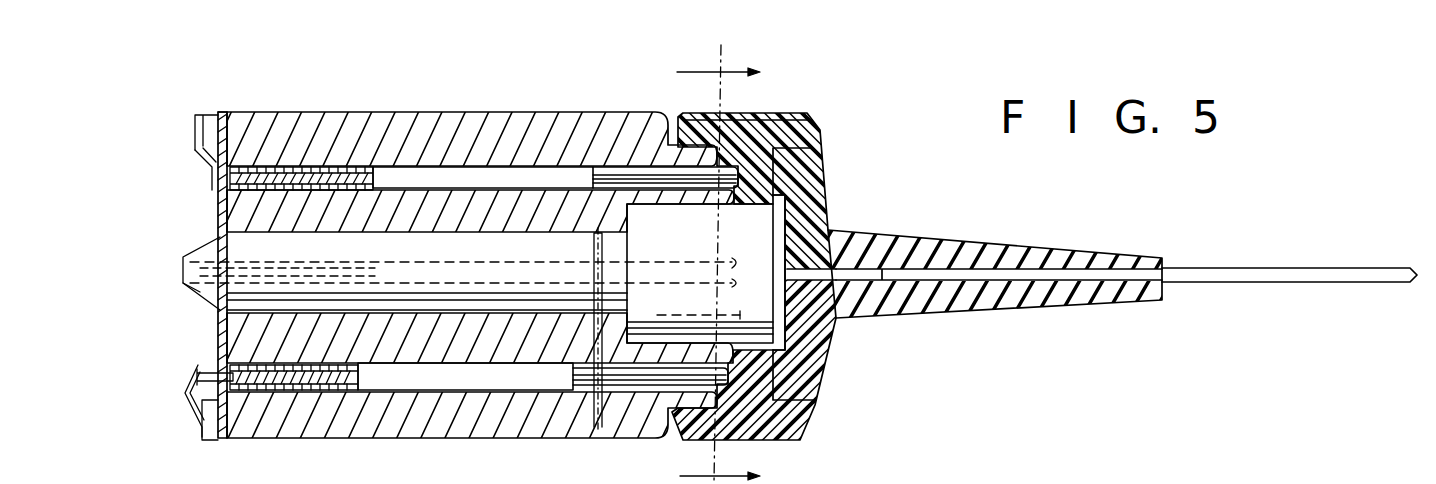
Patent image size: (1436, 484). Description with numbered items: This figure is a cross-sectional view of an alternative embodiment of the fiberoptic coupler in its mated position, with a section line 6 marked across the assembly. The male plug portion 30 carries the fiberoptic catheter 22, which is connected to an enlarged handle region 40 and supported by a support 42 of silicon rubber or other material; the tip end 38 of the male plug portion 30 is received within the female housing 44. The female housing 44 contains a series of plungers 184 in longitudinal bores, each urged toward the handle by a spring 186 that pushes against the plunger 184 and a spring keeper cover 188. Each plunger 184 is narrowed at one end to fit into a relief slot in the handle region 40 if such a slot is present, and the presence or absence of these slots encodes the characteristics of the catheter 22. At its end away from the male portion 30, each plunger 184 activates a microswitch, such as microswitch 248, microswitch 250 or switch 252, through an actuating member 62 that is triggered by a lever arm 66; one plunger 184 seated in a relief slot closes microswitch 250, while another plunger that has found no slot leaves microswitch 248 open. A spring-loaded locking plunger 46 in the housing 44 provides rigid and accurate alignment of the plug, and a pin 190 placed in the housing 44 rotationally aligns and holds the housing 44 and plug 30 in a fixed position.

The fiberoptic catheter 22 is at (1283, 270).
The male plug portion 30 is at (842, 384).
The tip end 38 is at (202, 246).
The enlarged handle region 40 is at (805, 112).
The support 42 is at (1058, 249).
The female housing 44 is at (557, 111).
The locking plunger 46 is at (593, 440).
The actuating member 62 is at (190, 413).
The lever arm 66 is at (202, 163).
The plunger 184 is at (537, 258).
The spring 186 is at (357, 166).
The spring keeper cover 188 is at (225, 112).
The pin 190 is at (712, 296).
The microswitch 248 is at (212, 443).
The microswitch 250 is at (208, 113).
The switch 252 is at (170, 292).
The section line 6- 6 is at (718, 259).